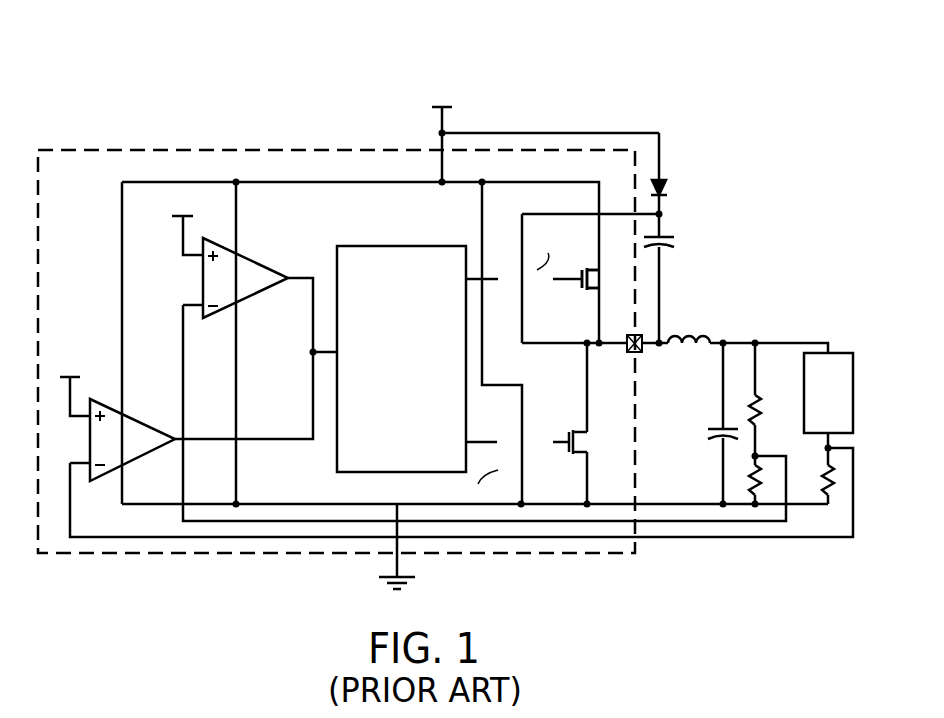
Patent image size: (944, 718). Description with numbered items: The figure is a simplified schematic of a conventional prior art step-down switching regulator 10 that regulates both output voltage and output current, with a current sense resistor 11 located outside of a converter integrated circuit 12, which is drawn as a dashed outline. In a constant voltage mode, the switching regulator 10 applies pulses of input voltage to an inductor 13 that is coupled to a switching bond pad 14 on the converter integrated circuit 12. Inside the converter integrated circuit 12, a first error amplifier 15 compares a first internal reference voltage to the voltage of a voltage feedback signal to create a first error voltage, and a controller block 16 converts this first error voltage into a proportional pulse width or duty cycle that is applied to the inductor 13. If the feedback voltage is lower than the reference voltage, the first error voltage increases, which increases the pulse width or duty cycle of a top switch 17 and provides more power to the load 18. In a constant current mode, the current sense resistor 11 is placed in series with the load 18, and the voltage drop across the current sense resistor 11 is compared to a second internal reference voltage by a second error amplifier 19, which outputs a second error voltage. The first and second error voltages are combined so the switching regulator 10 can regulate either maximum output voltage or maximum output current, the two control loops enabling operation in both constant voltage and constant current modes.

The switching regulator 10 is at (312, 63).
The current sense resistor 11 is at (821, 482).
The converter integrated circuit 12 is at (253, 149).
The inductor 13 is at (698, 346).
The switching bond pad 14 is at (639, 353).
The first error amplifier 15 is at (275, 272).
The controller block 16 is at (412, 394).
The top switch 17 is at (591, 284).
The load 18 is at (838, 407).
The second error amplifier 19 is at (130, 461).